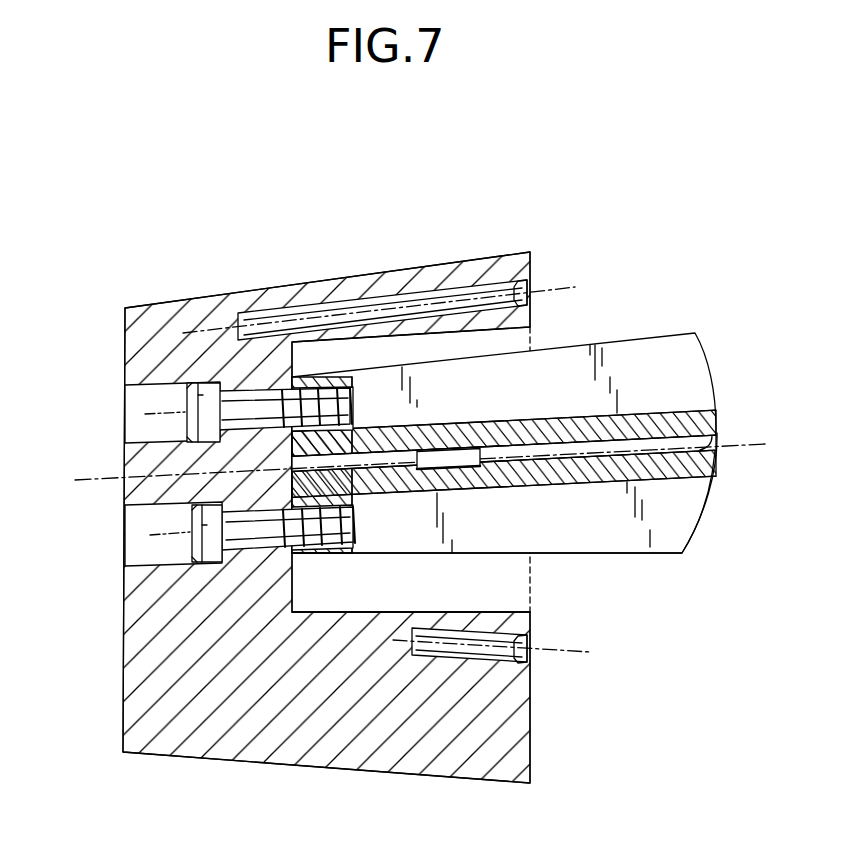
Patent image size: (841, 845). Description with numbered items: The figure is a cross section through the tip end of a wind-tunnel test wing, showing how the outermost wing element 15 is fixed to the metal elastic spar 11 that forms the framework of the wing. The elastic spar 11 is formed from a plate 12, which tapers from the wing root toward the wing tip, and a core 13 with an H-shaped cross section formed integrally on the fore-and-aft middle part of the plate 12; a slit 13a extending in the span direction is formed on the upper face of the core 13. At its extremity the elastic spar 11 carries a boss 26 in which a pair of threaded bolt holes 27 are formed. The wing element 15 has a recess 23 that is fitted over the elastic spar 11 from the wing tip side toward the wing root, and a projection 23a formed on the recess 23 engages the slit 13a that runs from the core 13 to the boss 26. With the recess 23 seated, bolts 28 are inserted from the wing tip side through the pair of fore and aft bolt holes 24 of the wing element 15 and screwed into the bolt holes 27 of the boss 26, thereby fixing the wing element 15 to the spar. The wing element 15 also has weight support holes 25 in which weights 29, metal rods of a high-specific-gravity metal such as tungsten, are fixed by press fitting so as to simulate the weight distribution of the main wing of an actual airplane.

The elastic spar 11 is at (648, 332).
The plate 12 is at (628, 555).
The core 13 is at (684, 410).
The slit 13a is at (710, 462).
The wing element 15 is at (334, 255).
The recess 23 is at (484, 608).
The projection 23a is at (466, 455).
The bolt hole 24 is at (252, 392).
The weight support hole 25 is at (398, 291).
The boss 26 is at (350, 557).
The bolt hole 27 is at (330, 392).
The bolt 28 is at (198, 410).
The weight 29 is at (531, 283).